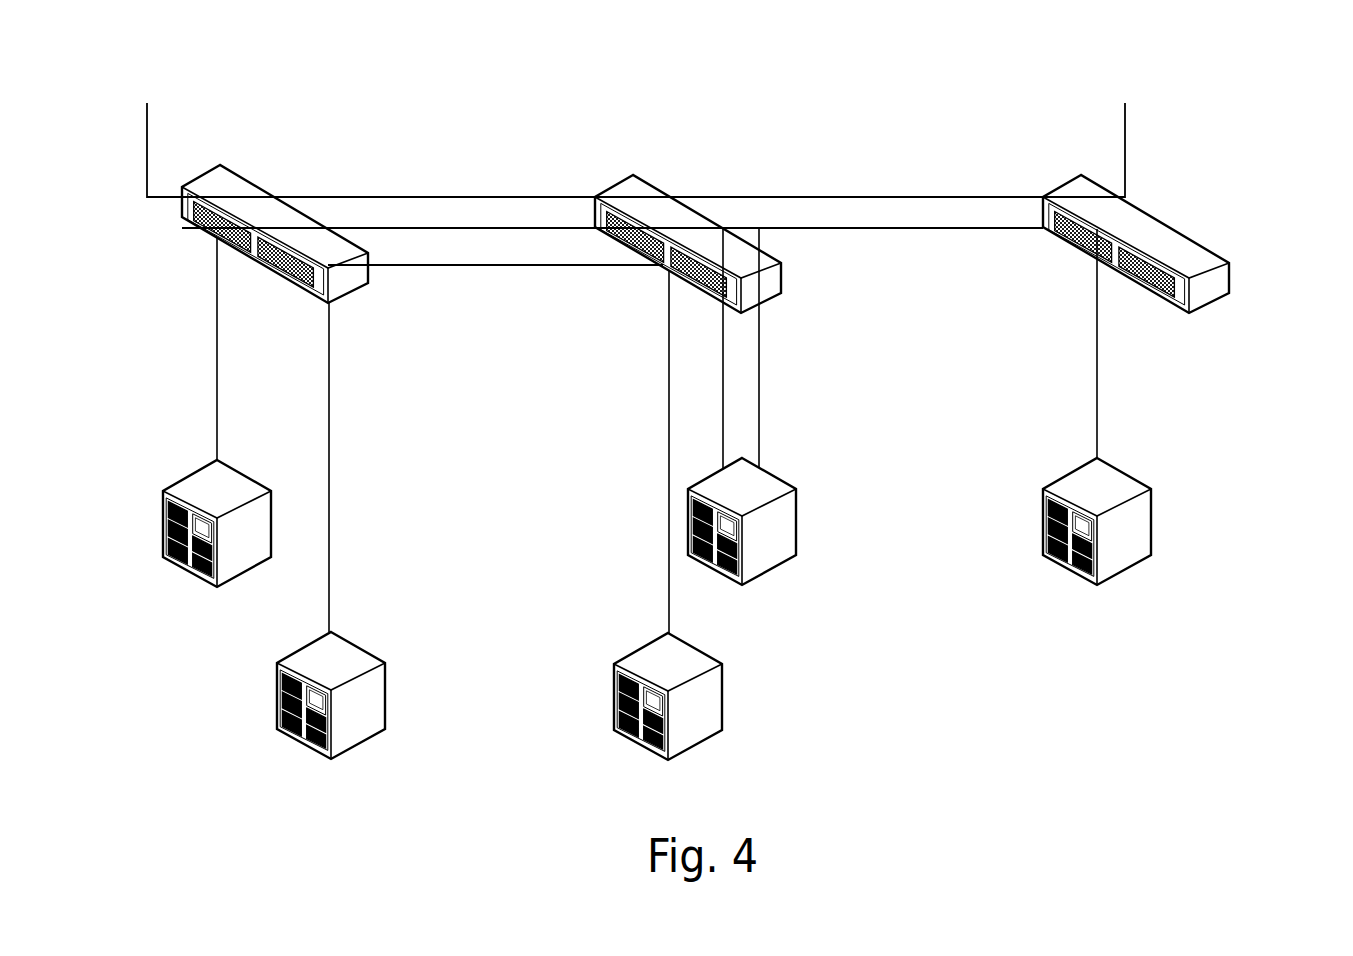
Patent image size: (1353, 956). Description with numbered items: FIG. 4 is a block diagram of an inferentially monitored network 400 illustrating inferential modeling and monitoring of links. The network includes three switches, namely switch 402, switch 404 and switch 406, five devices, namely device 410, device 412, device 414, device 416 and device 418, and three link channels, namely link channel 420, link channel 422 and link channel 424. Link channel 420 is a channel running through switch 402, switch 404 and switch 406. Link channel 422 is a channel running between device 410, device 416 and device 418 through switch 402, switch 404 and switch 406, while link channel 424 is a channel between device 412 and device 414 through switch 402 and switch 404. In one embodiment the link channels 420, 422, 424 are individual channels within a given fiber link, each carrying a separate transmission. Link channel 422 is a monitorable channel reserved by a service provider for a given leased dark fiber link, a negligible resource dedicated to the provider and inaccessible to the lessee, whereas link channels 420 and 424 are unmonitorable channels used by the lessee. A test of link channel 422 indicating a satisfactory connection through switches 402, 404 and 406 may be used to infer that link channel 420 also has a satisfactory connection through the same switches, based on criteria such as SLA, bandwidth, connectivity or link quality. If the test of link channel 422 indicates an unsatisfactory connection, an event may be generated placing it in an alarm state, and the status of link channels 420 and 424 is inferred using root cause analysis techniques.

The inferentially monitored network 400 is at (1237, 53).
The switch 402 is at (220, 165).
The switch 404 is at (633, 176).
The switch 406 is at (1145, 203).
The device 410 is at (180, 480).
The device 412 is at (373, 656).
The device 414 is at (722, 670).
The device 416 is at (779, 474).
The device 418 is at (1138, 481).
The link channel 420 is at (472, 197).
The link channel 422 is at (947, 232).
The link channel 424 is at (483, 267).